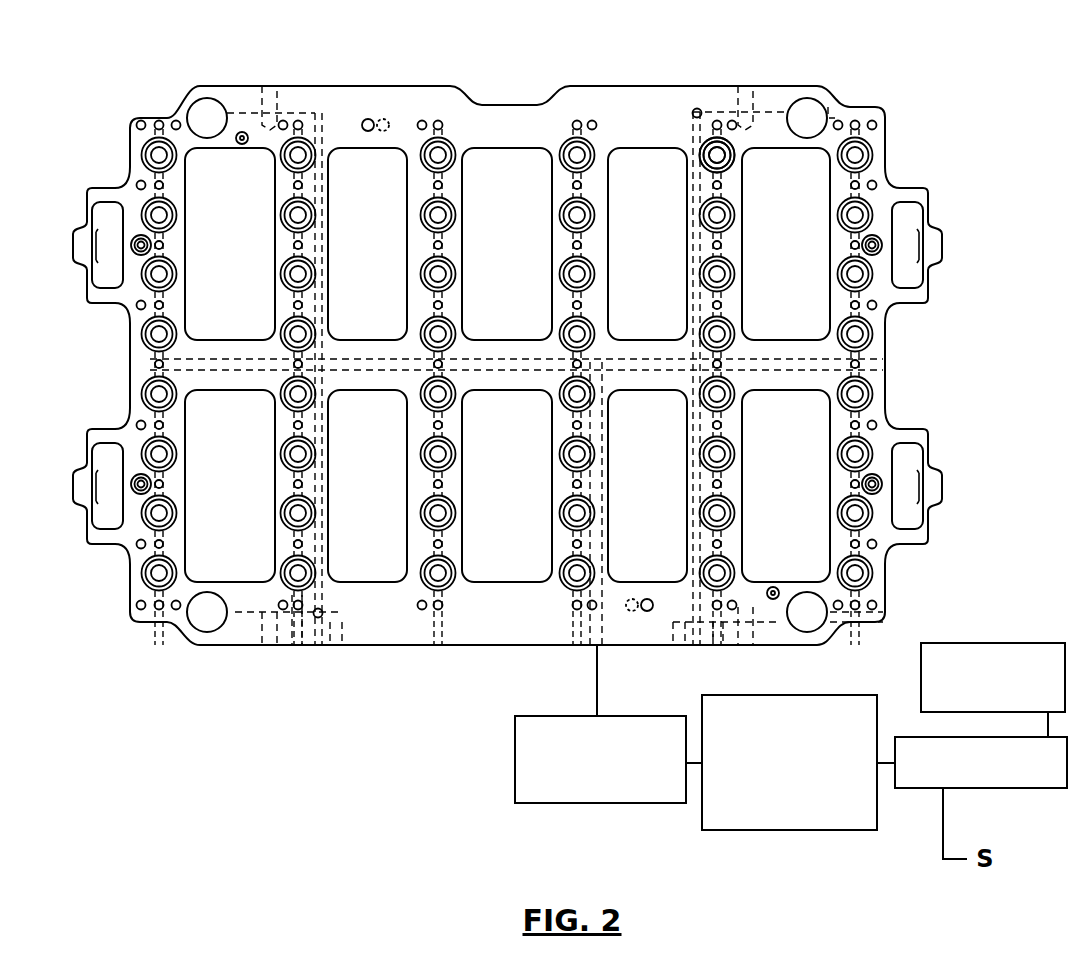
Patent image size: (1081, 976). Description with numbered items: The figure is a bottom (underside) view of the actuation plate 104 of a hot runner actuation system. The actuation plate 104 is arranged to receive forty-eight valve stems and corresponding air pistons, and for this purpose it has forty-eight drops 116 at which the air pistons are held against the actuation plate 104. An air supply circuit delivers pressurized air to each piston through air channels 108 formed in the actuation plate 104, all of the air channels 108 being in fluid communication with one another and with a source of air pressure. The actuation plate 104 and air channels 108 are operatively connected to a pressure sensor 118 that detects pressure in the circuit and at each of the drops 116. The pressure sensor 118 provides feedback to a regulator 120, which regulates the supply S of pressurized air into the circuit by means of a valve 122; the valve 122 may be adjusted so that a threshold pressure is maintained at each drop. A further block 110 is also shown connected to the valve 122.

The actuation plate 104 is at (888, 424).
The air channels 108 is at (797, 363).
The controller 110 is at (993, 677).
The drops 116 is at (723, 139).
The pressure sensor 118 is at (600, 759).
The regulator 120 is at (789, 762).
The valve 122 is at (981, 762).